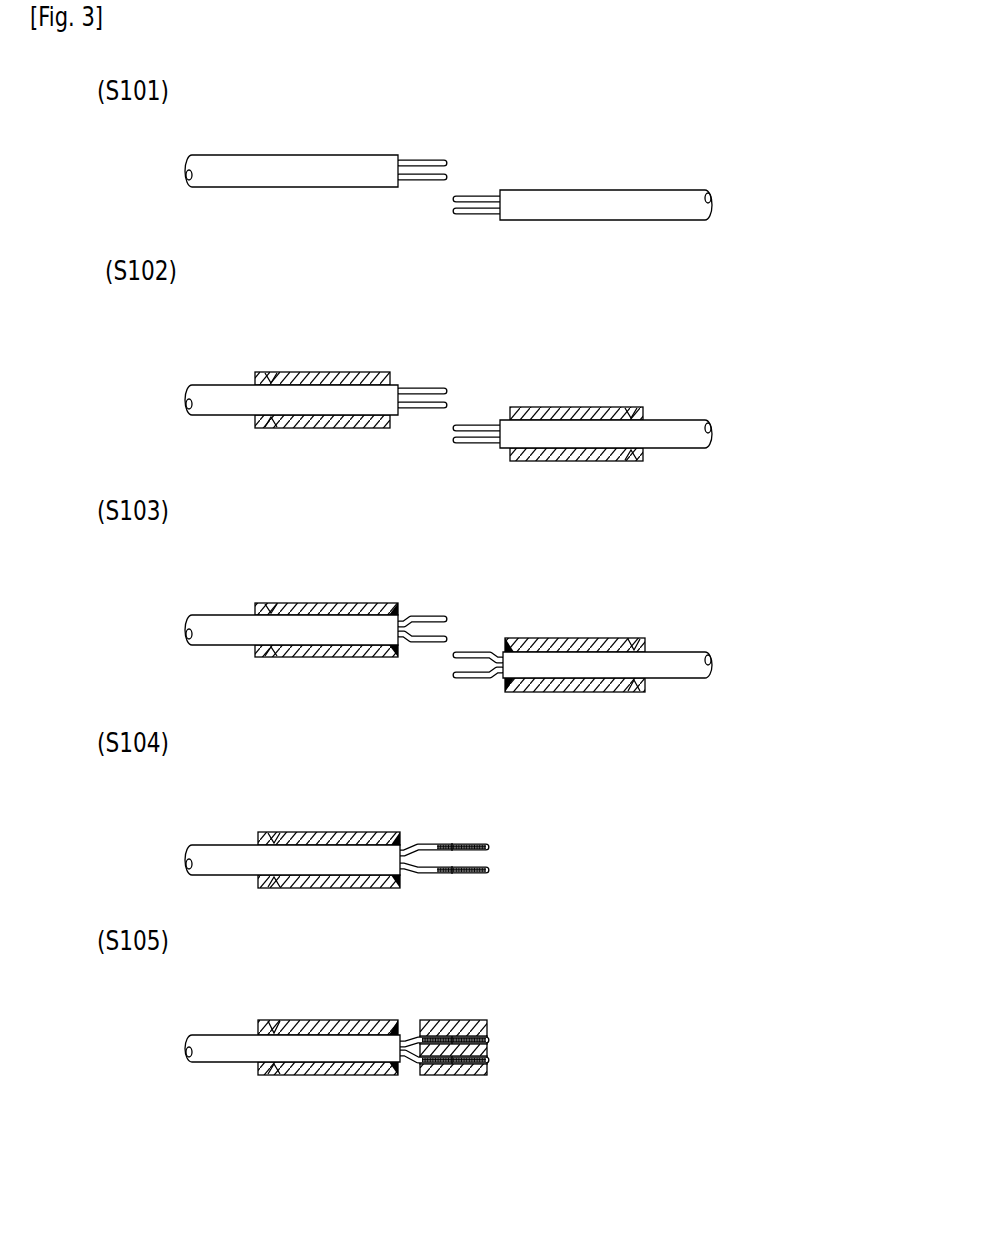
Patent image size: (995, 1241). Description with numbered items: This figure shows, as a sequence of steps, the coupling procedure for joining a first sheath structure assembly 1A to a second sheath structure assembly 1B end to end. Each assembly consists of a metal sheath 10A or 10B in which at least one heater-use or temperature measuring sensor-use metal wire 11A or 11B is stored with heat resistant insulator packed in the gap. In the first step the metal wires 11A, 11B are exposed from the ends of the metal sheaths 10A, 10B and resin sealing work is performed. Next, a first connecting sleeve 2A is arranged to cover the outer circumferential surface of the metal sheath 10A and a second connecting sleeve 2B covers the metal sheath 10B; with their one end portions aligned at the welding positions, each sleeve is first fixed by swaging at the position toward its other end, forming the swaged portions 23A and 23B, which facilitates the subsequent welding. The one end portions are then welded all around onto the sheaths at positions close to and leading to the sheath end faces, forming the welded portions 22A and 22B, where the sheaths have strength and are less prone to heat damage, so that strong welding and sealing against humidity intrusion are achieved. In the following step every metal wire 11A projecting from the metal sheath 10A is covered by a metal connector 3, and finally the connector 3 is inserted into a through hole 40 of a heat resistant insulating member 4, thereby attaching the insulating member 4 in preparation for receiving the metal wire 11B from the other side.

The first sheath structure assembly 1A is at (332, 599).
The metal sheath 10A is at (275, 155).
The metal wire 11A is at (433, 178).
The second sheath structure assembly 1B is at (594, 414).
The metal sheath 10B is at (583, 190).
The metal wire 11B is at (474, 197).
The first connecting sleeve 2A is at (341, 683).
The swaged portion 23A is at (270, 373).
The welded portion 22A is at (395, 603).
The second connecting sleeve 2B is at (592, 543).
The swaged portion 23B is at (633, 407).
The welded portion 22B is at (508, 692).
The connector 3 is at (480, 843).
The heat resistant insulating member 4 is at (484, 1023).
The through hole 40 is at (487, 1010).